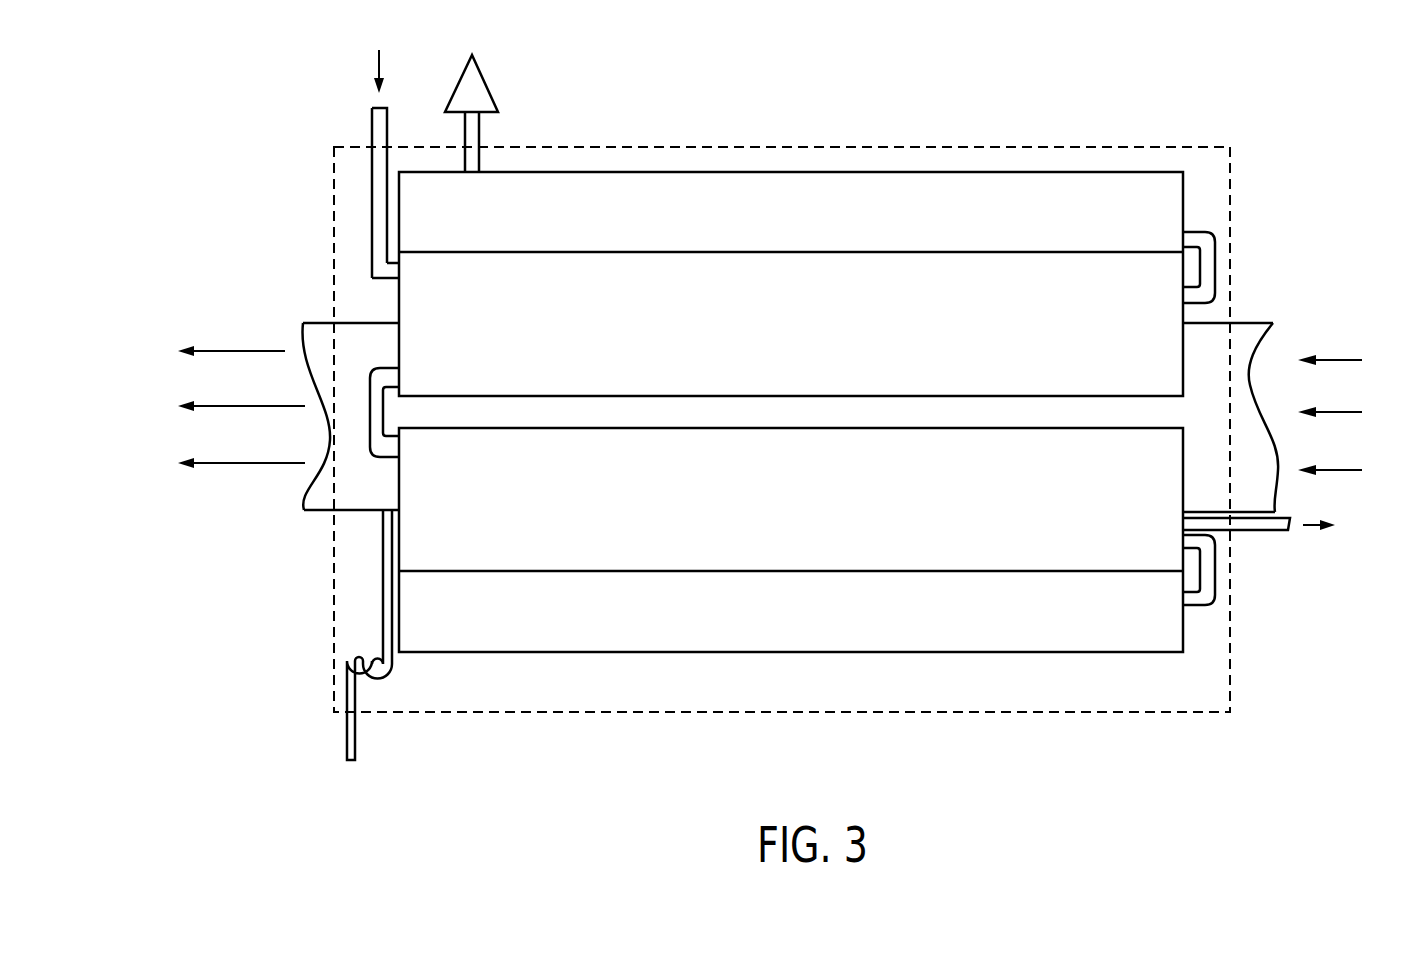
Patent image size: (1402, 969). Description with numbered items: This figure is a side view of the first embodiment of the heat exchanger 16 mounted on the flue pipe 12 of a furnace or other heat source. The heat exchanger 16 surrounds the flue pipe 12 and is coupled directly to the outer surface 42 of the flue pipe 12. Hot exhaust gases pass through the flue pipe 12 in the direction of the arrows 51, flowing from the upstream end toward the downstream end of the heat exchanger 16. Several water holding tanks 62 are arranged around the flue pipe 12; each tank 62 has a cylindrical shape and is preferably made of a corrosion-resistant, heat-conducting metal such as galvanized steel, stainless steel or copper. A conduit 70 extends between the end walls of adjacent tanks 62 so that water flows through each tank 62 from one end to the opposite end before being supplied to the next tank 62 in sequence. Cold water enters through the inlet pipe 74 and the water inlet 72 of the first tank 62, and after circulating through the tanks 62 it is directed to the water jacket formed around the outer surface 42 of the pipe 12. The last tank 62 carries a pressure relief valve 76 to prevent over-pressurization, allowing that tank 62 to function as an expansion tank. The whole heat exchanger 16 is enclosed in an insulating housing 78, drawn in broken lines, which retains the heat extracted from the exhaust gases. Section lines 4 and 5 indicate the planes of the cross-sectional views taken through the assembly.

The section line 4- 4 is at (230, 80).
The section line 5- 5 is at (763, 80).
The flue pipe 12 is at (1268, 307).
The heat exchanger 16 is at (1096, 52).
The outer surface of flue pipe 42 is at (1264, 327).
The arrows 51 is at (218, 463).
The water holding tanks 62 is at (1170, 203).
The conduit 70 is at (377, 457).
The water inlet 72 is at (383, 280).
The inlet pipe 74 is at (371, 128).
The pressure relief valve 76 is at (506, 89).
The insulating housing 78 is at (1245, 643).